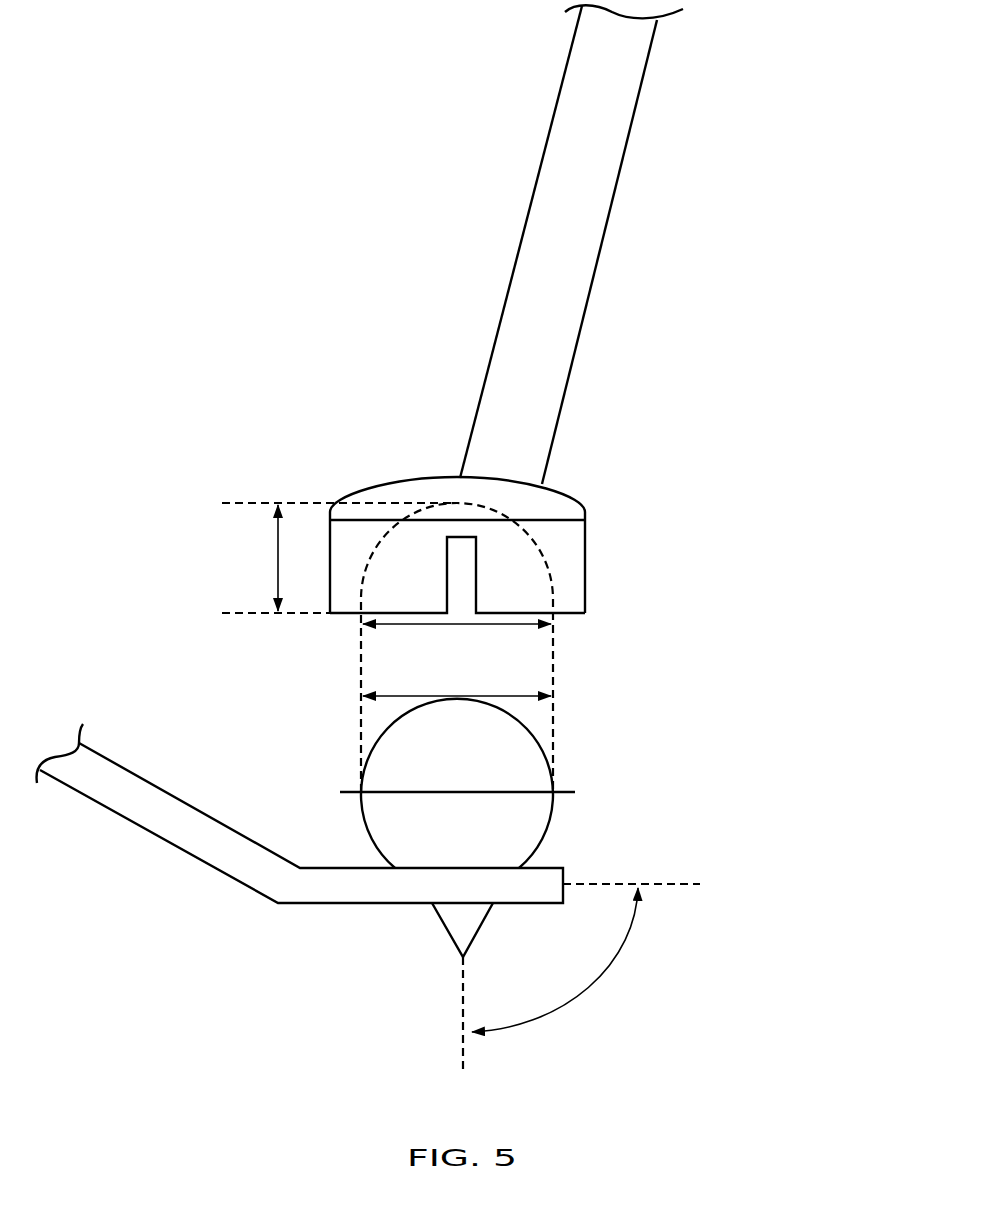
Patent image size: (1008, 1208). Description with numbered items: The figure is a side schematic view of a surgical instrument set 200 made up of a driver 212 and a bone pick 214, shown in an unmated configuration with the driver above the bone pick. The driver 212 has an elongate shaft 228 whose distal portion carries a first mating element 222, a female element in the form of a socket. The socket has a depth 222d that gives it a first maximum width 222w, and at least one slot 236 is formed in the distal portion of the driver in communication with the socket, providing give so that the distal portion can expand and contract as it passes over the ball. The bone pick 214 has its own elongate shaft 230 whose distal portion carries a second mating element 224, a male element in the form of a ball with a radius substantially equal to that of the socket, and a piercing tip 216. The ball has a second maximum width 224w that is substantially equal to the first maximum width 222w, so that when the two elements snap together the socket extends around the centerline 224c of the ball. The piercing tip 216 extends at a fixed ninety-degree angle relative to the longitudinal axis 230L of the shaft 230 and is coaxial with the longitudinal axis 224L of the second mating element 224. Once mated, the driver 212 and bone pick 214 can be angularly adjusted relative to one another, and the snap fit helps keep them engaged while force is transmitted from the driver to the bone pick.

The surgical instrument set 200 is at (161, 471).
The driver 212 is at (622, 330).
The elongate shaft 228 is at (617, 183).
The first mating element 222 is at (550, 551).
The depth 222d is at (275, 567).
The first maximum width 222w is at (482, 628).
The slot 236 is at (465, 575).
The bone pick 214 is at (654, 805).
The second mating element 224 is at (547, 832).
The second maximum width 224w is at (510, 695).
The centerline 224c is at (433, 793).
The longitudinal axis 224L is at (463, 1029).
The elongate shaft 230 is at (303, 902).
The longitudinal axis 230L is at (656, 884).
The piercing tip 216 is at (480, 928).